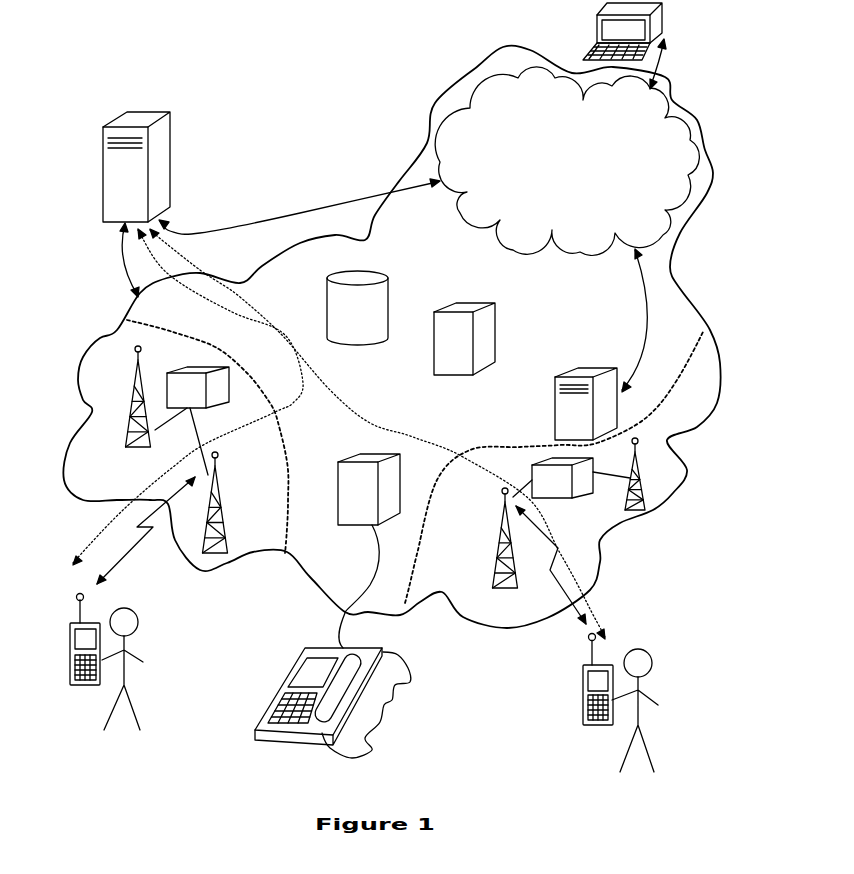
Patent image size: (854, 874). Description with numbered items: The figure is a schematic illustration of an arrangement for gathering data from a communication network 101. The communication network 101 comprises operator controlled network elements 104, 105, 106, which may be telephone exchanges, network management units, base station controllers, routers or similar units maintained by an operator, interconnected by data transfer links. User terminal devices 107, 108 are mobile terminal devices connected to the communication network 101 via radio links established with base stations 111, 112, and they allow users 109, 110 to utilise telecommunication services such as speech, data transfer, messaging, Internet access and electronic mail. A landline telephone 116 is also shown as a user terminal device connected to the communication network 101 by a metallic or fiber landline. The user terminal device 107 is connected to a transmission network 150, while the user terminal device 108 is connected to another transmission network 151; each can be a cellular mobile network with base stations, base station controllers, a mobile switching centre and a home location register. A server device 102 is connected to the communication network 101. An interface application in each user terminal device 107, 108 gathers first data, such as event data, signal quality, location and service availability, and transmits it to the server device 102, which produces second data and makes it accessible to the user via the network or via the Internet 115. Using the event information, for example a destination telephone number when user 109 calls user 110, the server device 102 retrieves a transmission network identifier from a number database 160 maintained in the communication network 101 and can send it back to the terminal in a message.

The communication network 101 is at (100, 338).
The server device 102 is at (148, 112).
The operator controlled network element 104 is at (470, 361).
The operator controlled network element 105 is at (373, 506).
The operator controlled network element 106 is at (591, 429).
The user terminal device 107 is at (84, 686).
The user terminal device 108 is at (597, 727).
The user 109 is at (135, 713).
The user 110 is at (647, 752).
The base station 111 is at (225, 522).
The base station 112 is at (497, 560).
The Internet 115 is at (580, 138).
The landline telephone 116 is at (274, 742).
The transmission network 150 is at (113, 478).
The transmission network 151 is at (603, 528).
The number database 160 is at (373, 321).